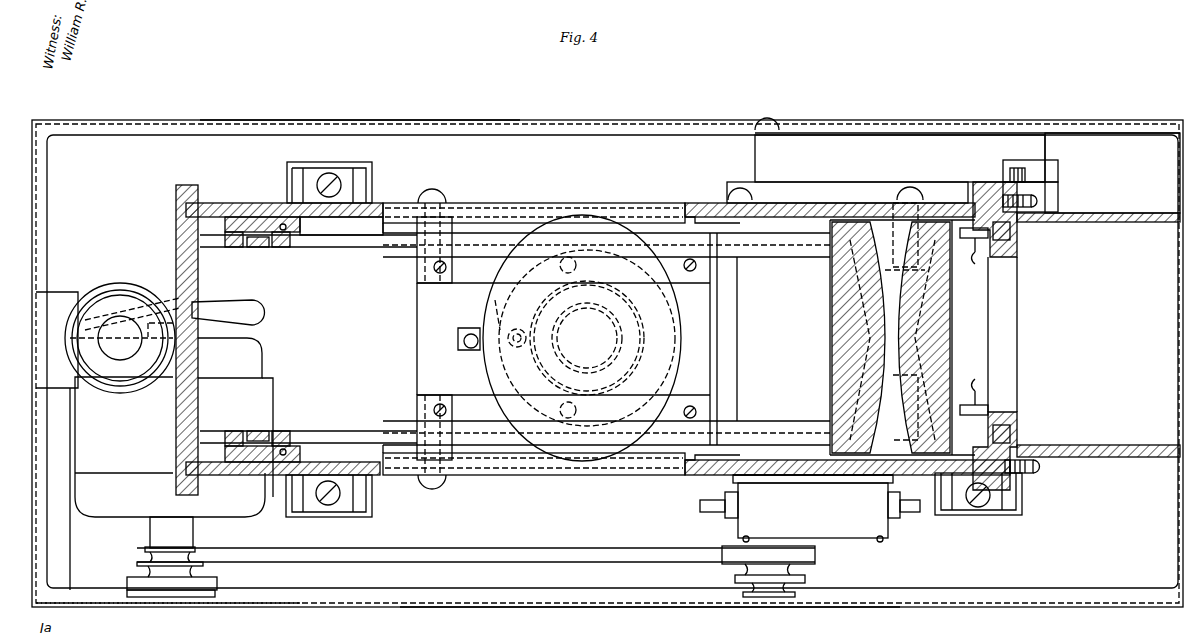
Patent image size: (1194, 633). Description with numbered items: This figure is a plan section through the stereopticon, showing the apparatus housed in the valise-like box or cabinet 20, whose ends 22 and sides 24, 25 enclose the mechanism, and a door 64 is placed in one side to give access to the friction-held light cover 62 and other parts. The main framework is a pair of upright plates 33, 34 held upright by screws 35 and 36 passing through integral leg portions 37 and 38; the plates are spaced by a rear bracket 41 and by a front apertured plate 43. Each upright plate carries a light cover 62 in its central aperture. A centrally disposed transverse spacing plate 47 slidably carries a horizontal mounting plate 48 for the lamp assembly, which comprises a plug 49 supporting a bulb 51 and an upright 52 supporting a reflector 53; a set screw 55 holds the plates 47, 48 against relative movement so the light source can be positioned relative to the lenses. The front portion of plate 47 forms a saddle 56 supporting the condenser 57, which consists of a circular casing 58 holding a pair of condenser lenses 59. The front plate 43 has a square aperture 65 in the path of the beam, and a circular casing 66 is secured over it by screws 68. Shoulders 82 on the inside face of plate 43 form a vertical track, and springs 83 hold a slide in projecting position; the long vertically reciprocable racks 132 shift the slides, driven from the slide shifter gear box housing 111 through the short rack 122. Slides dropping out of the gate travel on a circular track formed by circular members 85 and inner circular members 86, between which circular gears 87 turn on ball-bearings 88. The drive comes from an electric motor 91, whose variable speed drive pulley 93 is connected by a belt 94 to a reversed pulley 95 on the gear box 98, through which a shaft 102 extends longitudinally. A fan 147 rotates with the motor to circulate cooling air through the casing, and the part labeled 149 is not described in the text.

The box or cabinet 20 is at (438, 121).
The side 24 is at (333, 121).
The end 22 is at (39, 547).
The side 25 is at (60, 606).
The door 64 is at (668, 607).
The end block 149 is at (60, 303).
The electric motor 91 is at (118, 498).
The horizontal mounting plate 48 is at (121, 300).
The rear bracket 41 is at (186, 291).
The fan 147 is at (249, 312).
The upright plate 34 is at (245, 198).
The upright plate 33 is at (233, 473).
The circular member 85 is at (237, 246).
The inner circular member 86 is at (283, 247).
The circular gear 87 is at (262, 247).
The ball-bearing 88 is at (287, 240).
The leg portion 38 is at (363, 190).
The screw 36 is at (326, 177).
The leg portion 37 is at (359, 499).
The screw 35 is at (330, 506).
The light cover 62 is at (563, 198).
The transverse spacing plate 47 is at (418, 272).
The bulb 51 is at (670, 326).
The plug 49 is at (620, 337).
The reflector 53 is at (493, 306).
The upright 52 is at (470, 334).
The set screw 55 is at (505, 345).
The condenser 57 is at (830, 316).
The saddle 56 is at (832, 403).
The condenser lens 59 is at (913, 294).
The housing 111 is at (818, 150).
The short rack 122 is at (1010, 164).
The screw 68 is at (1038, 200).
The square aperture 65 is at (1009, 383).
The front apertured plate 43 is at (1016, 416).
The circular casing 66 is at (1123, 457).
The rack 132 is at (1018, 233).
The shoulder 82 is at (982, 243).
The spring 83 is at (973, 238).
The gear box 98 is at (876, 523).
The shaft 102 is at (708, 508).
The circular casing 58 is at (873, 474).
The belt 94 is at (393, 557).
The pulley 95 is at (805, 576).
The variable speed drive pulley 93 is at (135, 582).